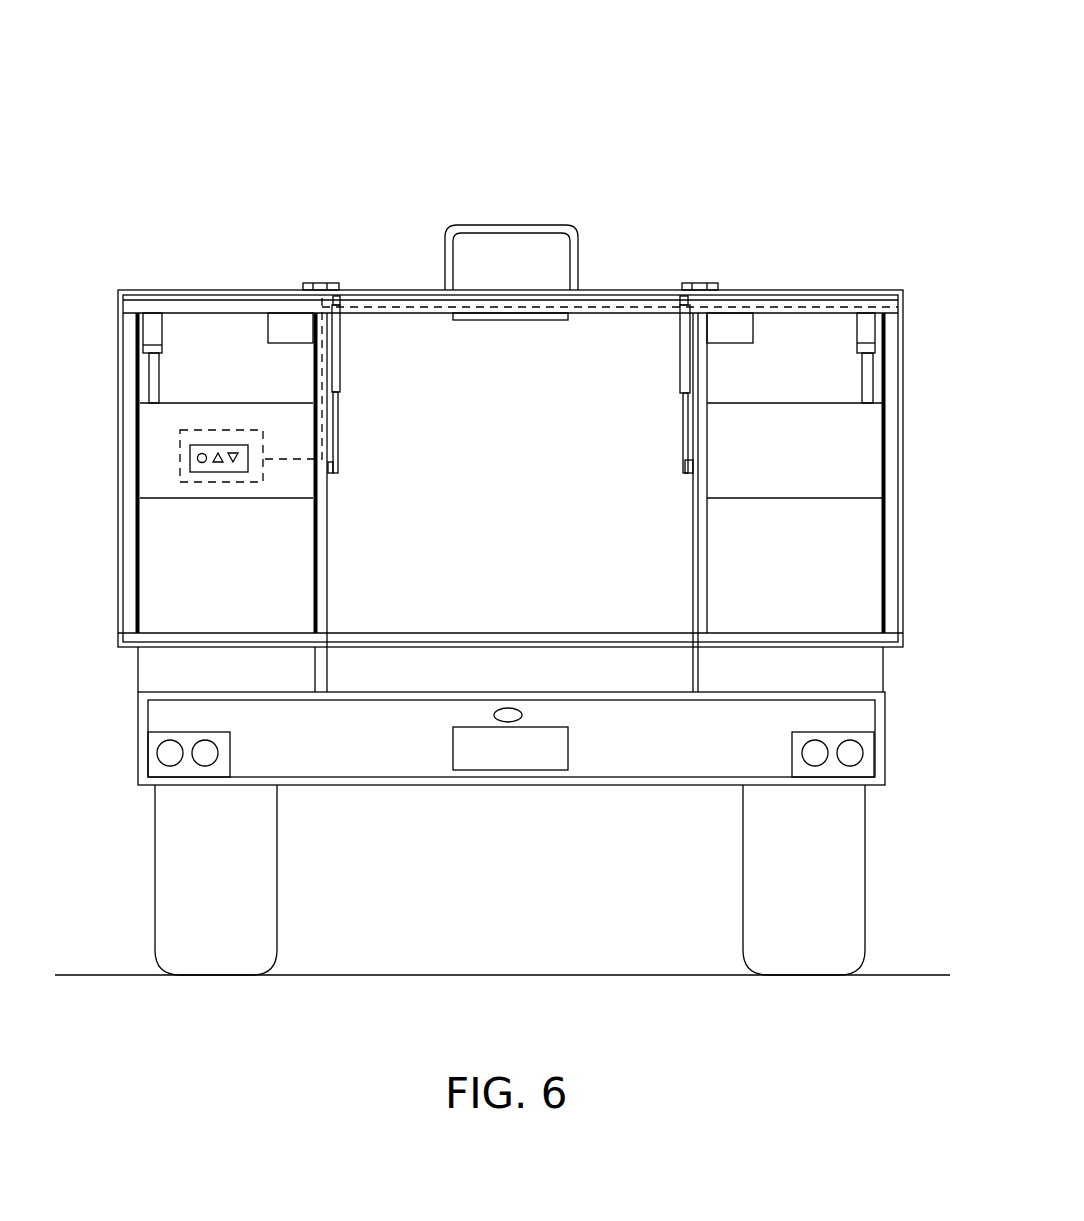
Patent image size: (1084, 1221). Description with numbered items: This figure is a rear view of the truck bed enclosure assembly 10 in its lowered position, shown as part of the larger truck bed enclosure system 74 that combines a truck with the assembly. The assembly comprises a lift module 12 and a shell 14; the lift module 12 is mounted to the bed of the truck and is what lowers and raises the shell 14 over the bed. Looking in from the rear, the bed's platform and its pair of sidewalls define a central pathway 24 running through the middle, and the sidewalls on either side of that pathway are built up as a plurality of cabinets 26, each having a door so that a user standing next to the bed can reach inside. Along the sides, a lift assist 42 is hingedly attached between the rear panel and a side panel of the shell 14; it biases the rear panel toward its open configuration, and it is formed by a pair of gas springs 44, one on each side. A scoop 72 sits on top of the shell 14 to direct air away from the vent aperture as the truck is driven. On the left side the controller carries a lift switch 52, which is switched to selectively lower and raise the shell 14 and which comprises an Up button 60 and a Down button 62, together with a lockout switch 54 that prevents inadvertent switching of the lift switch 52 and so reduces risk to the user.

The truck bed enclosure assembly 10 is at (665, 100).
The lift module 12 is at (157, 372).
The shell 14 is at (903, 345).
The central pathway 24 is at (530, 477).
The cabinets 26 is at (280, 552).
The lift assist 42 is at (340, 353).
The gas springs 44 is at (340, 333).
The lift switch 52 is at (232, 474).
The lockout switch 54 is at (202, 452).
The Up button 60 is at (219, 452).
The Down button 62 is at (233, 452).
The scoop 72 is at (510, 228).
The truck bed enclosure system 74 is at (712, 130).